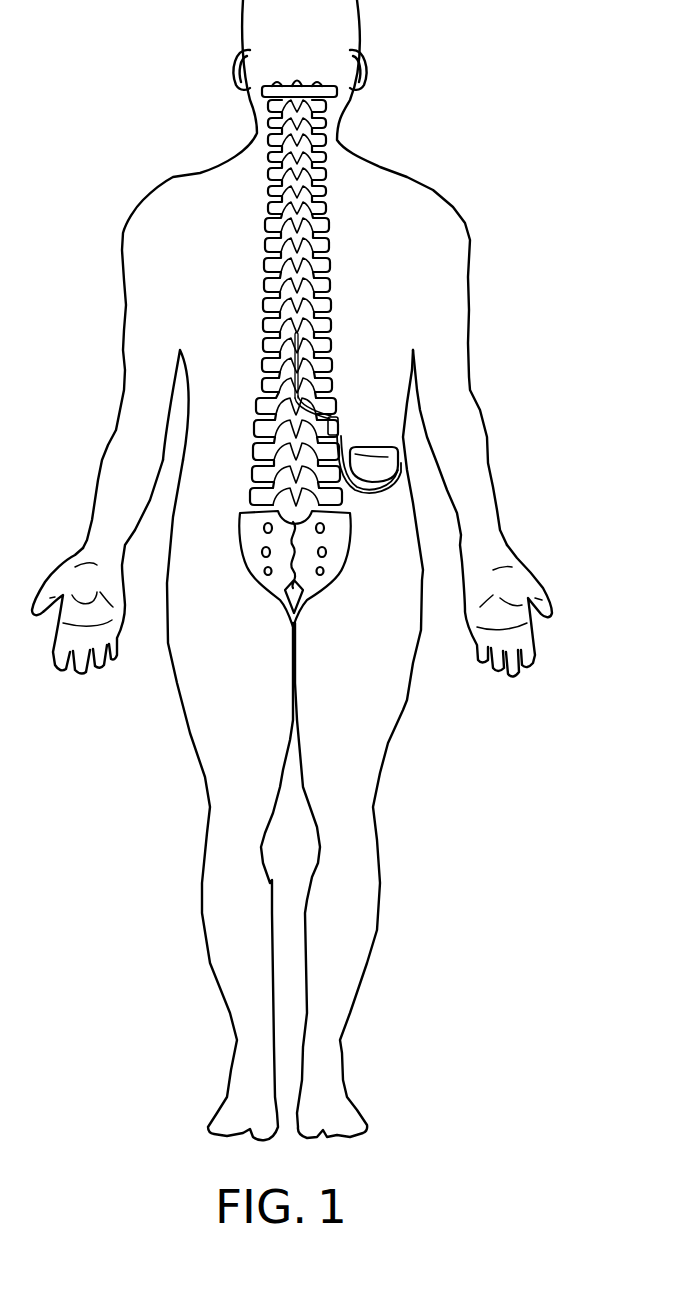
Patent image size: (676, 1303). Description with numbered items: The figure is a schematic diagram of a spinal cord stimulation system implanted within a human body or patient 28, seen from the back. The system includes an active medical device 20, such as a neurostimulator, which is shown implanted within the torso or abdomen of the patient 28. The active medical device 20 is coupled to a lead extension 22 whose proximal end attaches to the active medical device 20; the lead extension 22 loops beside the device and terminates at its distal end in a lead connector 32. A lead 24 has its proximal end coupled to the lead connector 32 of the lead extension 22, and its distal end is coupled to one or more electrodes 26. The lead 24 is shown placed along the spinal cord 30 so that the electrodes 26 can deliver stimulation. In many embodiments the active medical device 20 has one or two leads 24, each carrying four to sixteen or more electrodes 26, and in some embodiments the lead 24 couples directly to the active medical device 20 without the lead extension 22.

The active medical device 20 is at (377, 462).
The lead extension 22 is at (366, 488).
The lead 24 is at (310, 403).
The electrodes 26 is at (327, 343).
The patient 28 is at (420, 178).
The spinal cord 30 is at (330, 299).
The lead connector 32 is at (338, 430).